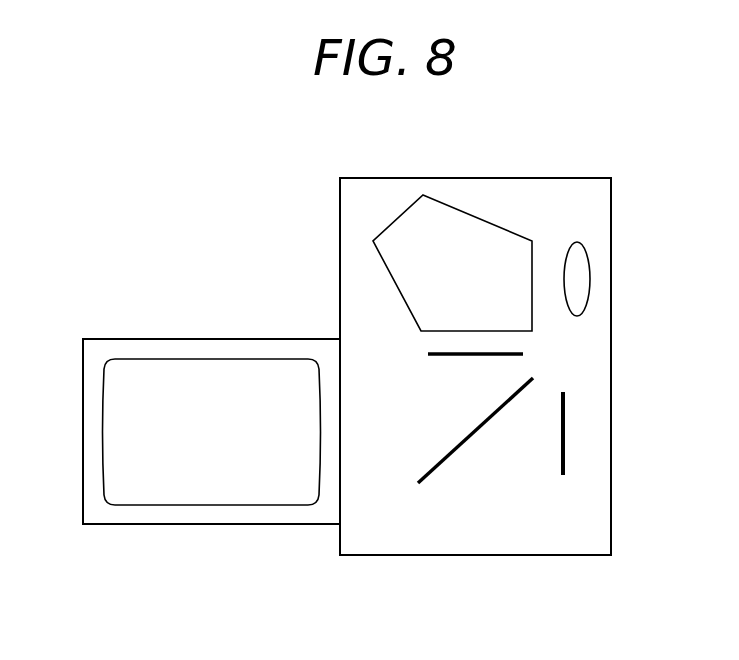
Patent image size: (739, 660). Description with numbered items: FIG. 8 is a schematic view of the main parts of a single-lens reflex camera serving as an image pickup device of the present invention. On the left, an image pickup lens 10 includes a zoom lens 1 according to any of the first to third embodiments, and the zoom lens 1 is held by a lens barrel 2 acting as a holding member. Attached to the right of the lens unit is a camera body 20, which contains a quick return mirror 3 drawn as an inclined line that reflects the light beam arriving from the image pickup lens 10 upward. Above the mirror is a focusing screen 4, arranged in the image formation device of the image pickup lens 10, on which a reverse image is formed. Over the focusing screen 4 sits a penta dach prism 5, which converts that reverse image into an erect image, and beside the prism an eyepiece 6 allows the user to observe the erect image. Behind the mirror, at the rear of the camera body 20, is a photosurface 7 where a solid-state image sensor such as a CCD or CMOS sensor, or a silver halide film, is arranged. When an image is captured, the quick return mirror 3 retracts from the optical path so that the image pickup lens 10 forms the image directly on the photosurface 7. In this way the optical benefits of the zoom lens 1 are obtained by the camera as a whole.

The camera body 20 is at (545, 172).
The lens barrel 2 is at (200, 527).
The image pickup lens 10 is at (272, 338).
The zoom lens 1 is at (175, 358).
The penta dach prism 5 is at (399, 213).
The eyepiece 6 is at (590, 278).
The photosurface 7 is at (566, 422).
The focusing screen 4 is at (461, 358).
The quick return mirror 3 is at (450, 455).